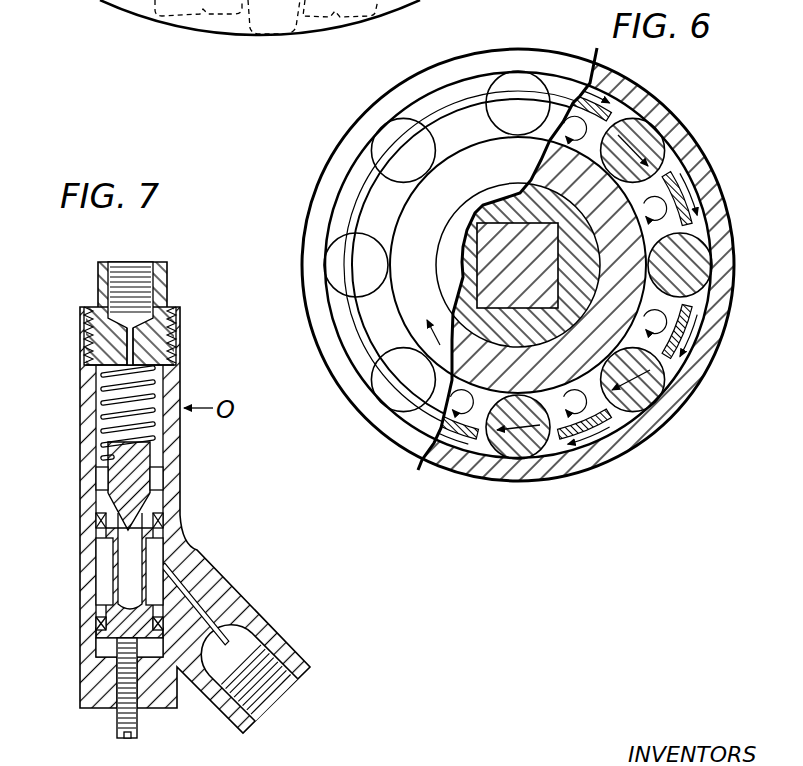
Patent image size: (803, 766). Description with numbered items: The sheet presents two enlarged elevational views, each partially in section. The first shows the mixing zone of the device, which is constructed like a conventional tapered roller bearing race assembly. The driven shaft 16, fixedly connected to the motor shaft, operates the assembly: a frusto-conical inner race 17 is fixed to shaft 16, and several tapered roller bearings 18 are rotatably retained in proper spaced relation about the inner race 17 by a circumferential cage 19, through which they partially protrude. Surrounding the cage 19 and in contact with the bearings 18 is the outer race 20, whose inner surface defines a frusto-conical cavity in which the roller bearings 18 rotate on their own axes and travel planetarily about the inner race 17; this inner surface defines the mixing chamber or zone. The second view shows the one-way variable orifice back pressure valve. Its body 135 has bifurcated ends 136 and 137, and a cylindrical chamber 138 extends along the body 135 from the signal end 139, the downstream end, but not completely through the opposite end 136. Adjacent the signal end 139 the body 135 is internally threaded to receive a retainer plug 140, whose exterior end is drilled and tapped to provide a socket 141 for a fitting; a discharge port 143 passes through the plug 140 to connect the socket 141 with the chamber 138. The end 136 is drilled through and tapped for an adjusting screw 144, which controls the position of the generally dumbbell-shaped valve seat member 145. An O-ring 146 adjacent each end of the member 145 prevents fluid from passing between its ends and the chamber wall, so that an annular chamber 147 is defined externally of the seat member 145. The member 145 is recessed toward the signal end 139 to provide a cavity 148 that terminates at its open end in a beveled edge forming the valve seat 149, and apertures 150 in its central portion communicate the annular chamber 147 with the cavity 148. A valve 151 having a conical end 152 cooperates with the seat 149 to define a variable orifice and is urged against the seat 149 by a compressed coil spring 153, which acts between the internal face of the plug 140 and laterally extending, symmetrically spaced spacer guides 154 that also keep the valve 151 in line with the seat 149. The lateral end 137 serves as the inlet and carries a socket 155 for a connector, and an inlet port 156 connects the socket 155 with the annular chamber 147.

In FIG. 6, the driven shaft 16 is at (500, 257).
In FIG. 6, the inner race 17 is at (560, 167).
In FIG. 6, the tapered roller bearings 18 is at (390, 137).
In FIG. 6, the circumferential cage 19 is at (362, 337).
In FIG. 6, the outer race 20 is at (326, 193).
In FIG. 7, the body 135 is at (88, 432).
In FIG. 7, the end 136 is at (93, 690).
In FIG. 7, the lateral end 137 is at (304, 660).
In FIG. 7, the cylindrical chamber 138 is at (101, 376).
In FIG. 7, the signal end 139 is at (85, 318).
In FIG. 7, the retainer plug 140 is at (98, 272).
In FIG. 7, the socket 141 is at (128, 268).
In FIG. 7, the discharge port 143 is at (133, 347).
In FIG. 7, the adjusting screw 144 is at (117, 722).
In FIG. 7, the valve seat member 145 is at (121, 592).
In FIG. 7, the O-ring 146 is at (98, 520).
In FIG. 7, the annular chamber 147 is at (102, 565).
In FIG. 7, the cavity 148 is at (128, 597).
In FIG. 7, the valve seat 149 is at (100, 504).
In FIG. 7, the apertures 150 is at (150, 553).
In FIG. 7, the valve 151 is at (158, 455).
In FIG. 7, the conical end 152 is at (138, 503).
In FIG. 7, the coil spring 153 is at (101, 403).
In FIG. 7, the spacer guides 154 is at (102, 478).
In FIG. 7, the socket 155 is at (270, 692).
In FIG. 7, the inlet port 156 is at (190, 598).